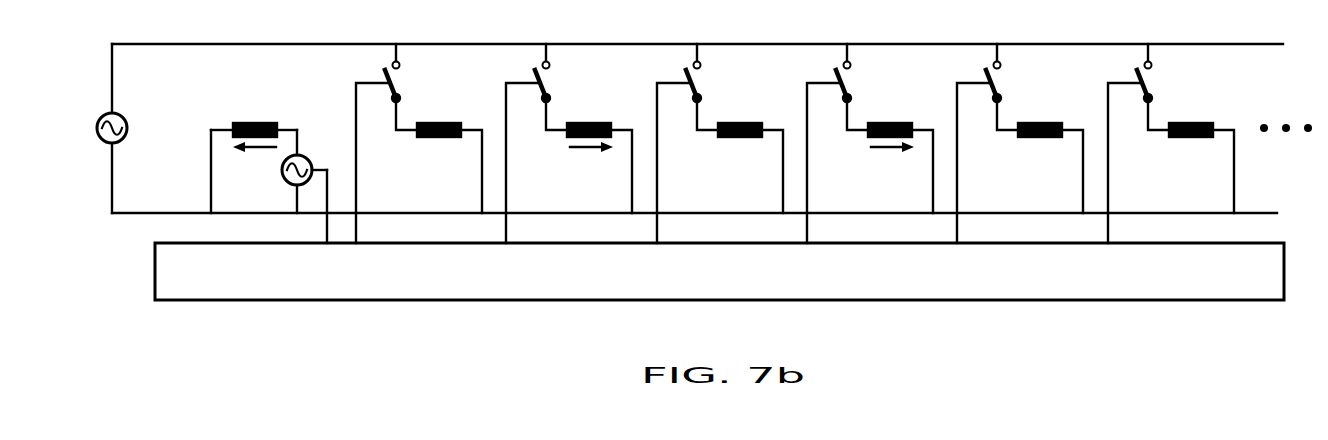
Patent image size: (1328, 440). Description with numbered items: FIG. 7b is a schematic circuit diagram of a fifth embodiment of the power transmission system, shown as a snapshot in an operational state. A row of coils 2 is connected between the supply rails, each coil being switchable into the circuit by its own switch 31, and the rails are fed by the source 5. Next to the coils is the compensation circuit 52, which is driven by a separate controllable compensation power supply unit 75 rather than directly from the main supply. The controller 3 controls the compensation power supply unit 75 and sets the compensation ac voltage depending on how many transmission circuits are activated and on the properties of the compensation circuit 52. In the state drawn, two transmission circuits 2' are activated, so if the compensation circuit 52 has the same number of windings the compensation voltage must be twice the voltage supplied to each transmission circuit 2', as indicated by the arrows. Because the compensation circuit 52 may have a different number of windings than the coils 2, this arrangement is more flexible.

The AC power source 5 is at (100, 115).
The compensation circuit 52 is at (256, 123).
The compensation power supply unit 75 is at (309, 158).
The switch 31 is at (400, 82).
The coil 2 is at (815, 132).
The activated transmission circuit 2' is at (742, 110).
The controller 3 is at (153, 272).